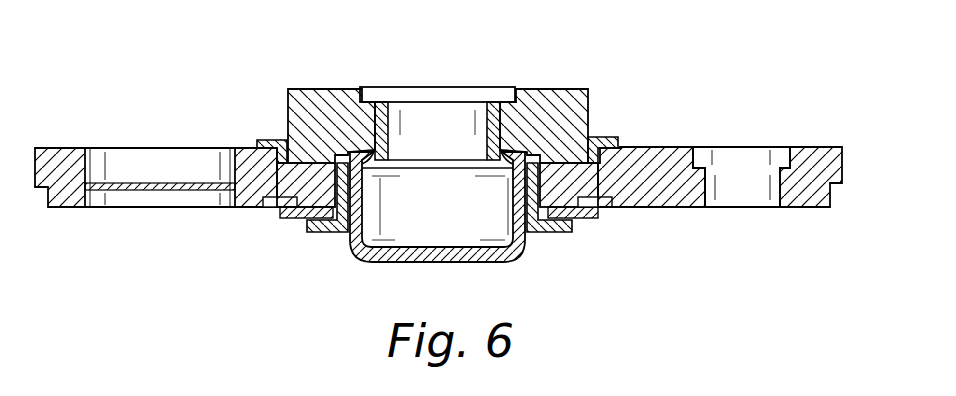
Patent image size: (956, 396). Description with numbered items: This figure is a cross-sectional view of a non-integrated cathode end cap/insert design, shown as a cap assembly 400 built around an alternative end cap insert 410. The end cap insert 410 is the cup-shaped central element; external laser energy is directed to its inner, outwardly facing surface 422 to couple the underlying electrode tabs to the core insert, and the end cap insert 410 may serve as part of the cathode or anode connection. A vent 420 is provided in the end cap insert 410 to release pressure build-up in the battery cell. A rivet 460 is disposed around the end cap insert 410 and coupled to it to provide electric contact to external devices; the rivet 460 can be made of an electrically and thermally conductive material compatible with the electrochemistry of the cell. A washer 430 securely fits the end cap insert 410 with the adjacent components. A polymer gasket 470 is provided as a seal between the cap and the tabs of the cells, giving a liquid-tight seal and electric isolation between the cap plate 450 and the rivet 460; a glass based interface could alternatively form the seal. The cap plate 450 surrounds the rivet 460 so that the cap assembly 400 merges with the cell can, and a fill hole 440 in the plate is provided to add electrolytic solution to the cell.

The cap assembly 400 is at (199, 52).
The end cap insert 410 is at (398, 140).
The vent 420 is at (132, 187).
The inner, outwardly facing surface 422 is at (447, 245).
The washer 430 is at (600, 208).
The fill hole 440 is at (722, 158).
The cap plate 450 is at (656, 147).
The rivet 460 is at (310, 88).
The polymer gasket 470 is at (566, 146).